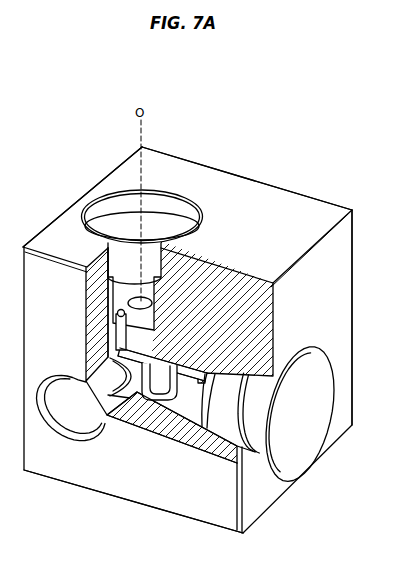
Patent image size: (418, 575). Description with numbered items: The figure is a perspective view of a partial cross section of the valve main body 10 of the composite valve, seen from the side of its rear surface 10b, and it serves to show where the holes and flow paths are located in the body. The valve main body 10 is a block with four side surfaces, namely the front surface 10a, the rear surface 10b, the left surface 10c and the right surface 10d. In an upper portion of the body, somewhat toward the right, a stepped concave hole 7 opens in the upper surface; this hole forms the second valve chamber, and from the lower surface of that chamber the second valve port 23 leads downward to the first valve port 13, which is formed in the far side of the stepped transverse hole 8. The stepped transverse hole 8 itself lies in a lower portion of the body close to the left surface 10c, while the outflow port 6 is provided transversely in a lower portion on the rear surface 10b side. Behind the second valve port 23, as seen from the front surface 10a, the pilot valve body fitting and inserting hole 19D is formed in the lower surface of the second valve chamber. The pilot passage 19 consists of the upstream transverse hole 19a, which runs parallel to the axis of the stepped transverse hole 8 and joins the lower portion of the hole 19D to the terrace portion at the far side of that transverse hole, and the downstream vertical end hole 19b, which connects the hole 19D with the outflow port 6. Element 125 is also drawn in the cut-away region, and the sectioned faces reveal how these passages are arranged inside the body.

The valve main body 10 is at (237, 174).
The front surface 10a is at (268, 184).
The rear surface 10b is at (124, 480).
The left surface 10c is at (343, 277).
The right surface 10d is at (92, 188).
The stepped concave hole 7 is at (164, 202).
The second valve port 23 is at (133, 300).
The pilot passage 19 is at (152, 362).
The upstream transverse hole 19a is at (162, 364).
The downstream vertical end hole 19b is at (117, 352).
The pilot valve body fitting and inserting hole 19D is at (108, 302).
The spring seat 125 is at (176, 394).
The first valve port 13 is at (150, 406).
The outflow port 6 is at (78, 426).
The stepped transverse hole 8 is at (293, 452).